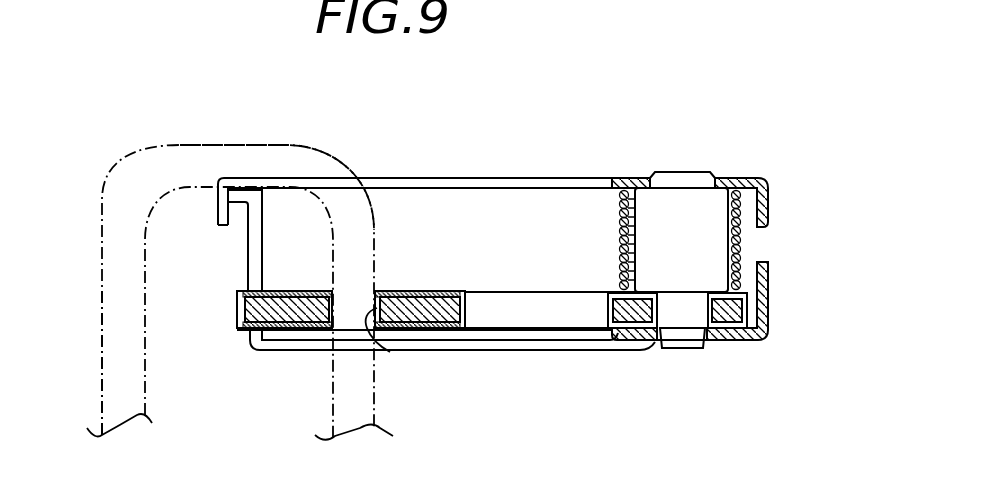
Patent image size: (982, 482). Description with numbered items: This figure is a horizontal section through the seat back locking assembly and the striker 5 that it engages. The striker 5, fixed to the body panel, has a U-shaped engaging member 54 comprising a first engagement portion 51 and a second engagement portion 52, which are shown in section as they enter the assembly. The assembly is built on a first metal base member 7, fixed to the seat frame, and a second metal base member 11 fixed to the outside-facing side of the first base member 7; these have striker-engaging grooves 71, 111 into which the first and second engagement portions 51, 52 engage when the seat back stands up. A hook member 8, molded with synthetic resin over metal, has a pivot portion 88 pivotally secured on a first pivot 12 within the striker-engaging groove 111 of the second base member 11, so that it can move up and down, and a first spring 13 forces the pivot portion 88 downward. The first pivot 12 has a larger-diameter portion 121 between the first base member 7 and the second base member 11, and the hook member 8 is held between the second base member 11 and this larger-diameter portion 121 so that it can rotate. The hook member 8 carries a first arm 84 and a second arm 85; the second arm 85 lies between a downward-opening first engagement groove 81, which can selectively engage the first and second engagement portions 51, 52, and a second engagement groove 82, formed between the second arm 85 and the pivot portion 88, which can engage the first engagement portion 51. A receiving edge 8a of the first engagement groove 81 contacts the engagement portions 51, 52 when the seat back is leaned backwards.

The striker 5 is at (260, 140).
The U-shaped engaging member 54 is at (320, 150).
The first engagement portion 51 is at (375, 247).
The second engagement portion 52 is at (102, 292).
The striker-engaging groove 71 is at (487, 178).
The first metal base member 7 is at (627, 177).
The hook member 8 is at (440, 330).
The receiving edge 8a is at (390, 352).
The first engagement groove 81 is at (330, 310).
The second engagement groove 82 is at (491, 313).
The first arm 84 is at (277, 331).
The second arm 85 is at (420, 332).
The striker-engaging groove 111 is at (567, 343).
The second metal base member 11 is at (640, 337).
The first pivot 12 is at (695, 172).
The first spring 13 is at (745, 237).
The pivot portion 88 is at (722, 332).
The larger-diameter portion 121 is at (748, 289).